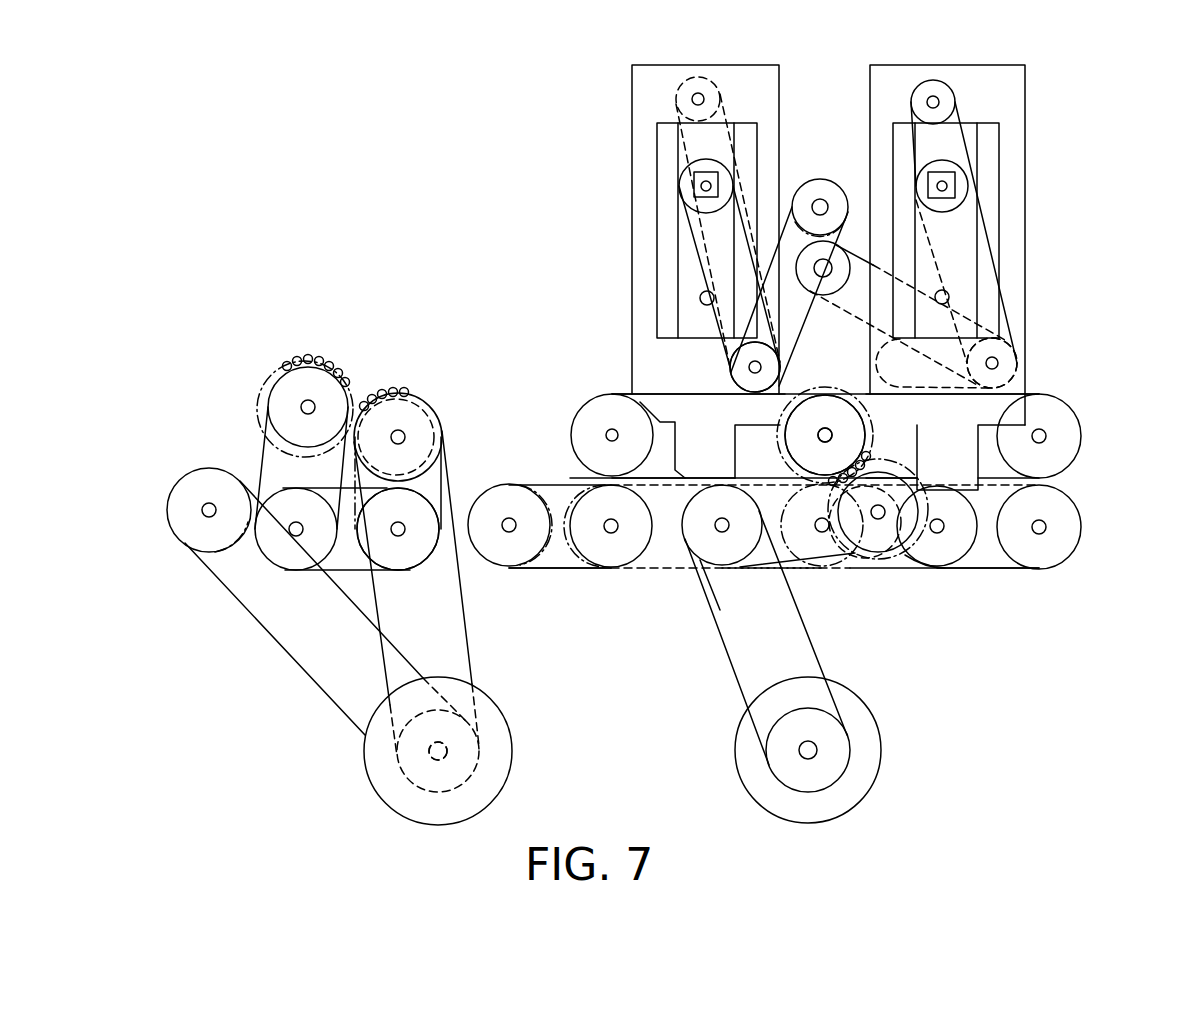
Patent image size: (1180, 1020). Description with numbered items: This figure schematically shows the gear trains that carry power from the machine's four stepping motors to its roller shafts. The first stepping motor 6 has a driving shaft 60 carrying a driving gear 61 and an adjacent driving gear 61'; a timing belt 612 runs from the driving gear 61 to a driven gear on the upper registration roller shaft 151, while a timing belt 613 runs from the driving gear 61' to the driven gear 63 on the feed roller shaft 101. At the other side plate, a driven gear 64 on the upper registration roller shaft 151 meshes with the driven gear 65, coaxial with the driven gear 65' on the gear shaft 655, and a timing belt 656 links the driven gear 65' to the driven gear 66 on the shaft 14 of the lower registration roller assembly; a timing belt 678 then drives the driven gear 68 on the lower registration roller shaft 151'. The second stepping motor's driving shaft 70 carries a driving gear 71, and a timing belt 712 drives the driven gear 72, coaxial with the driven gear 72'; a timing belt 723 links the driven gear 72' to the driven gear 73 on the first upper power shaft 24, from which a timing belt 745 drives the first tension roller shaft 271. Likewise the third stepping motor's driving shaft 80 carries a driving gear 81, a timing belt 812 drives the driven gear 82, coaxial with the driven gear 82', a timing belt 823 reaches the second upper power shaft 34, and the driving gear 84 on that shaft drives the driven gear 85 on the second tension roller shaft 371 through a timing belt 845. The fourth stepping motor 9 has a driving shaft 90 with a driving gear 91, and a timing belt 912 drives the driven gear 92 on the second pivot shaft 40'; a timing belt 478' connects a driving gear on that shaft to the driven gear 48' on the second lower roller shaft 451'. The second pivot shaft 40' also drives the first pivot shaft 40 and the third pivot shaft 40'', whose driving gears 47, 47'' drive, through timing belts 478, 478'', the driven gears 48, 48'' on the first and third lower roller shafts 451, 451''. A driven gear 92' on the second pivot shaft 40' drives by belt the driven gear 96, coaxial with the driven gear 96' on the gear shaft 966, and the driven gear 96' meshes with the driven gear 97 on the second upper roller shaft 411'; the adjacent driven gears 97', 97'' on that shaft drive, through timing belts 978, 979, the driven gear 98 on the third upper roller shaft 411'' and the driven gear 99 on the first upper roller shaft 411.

The first tension roller shaft 271 is at (698, 93).
The timing belt 745 is at (677, 104).
The driven gear 73 is at (688, 180).
The first upper power shaft 24 is at (700, 188).
The timing belt 723 is at (700, 256).
The driven gear 72 is at (659, 349).
The driven gear 72' is at (755, 367).
The driving shaft 70 is at (815, 200).
The driving gear 71 is at (823, 187).
The driving gear 81 is at (855, 233).
The driving shaft 80 is at (836, 283).
The timing belt 712 is at (800, 333).
The second tension roller shaft 371 is at (927, 96).
The driven gear 85 is at (942, 88).
The timing belt 845 is at (955, 130).
The driving gear 84 is at (962, 180).
The second upper power shaft 34 is at (948, 190).
The driven gear 82 is at (1031, 294).
The driven gear 82' is at (992, 363).
The timing belt 823 is at (1010, 318).
The timing belt 812 is at (934, 365).
The driven gear 99 is at (605, 432).
The first upper roller shaft 411 is at (572, 393).
The timing belt 979 is at (612, 394).
The driven gear 97 is at (829, 425).
The driven gear 97' is at (754, 435).
The driven gear 97'' is at (825, 435).
The second upper roller shaft 411' is at (865, 435).
The timing belt 978 is at (1037, 395).
The driven gear 98 is at (1062, 462).
The third upper roller shaft 411'' is at (1104, 430).
The driven gear 96' is at (899, 496).
The first pivot shaft 40 is at (513, 551).
The driving gear 47 is at (516, 551).
The first lower roller shaft 451 is at (611, 551).
The driven gear 48 is at (569, 505).
The second pivot shaft 40' is at (708, 553).
The timing belt 478 is at (560, 615).
The driven gear 48' is at (828, 563).
The driven gear 96 is at (878, 549).
The second lower roller shaft 451' is at (872, 559).
The third pivot shaft 40'' is at (960, 555).
The driving gear 47'' is at (953, 577).
The gear shaft 966 is at (927, 575).
The driven gear 48'' is at (1077, 527).
The third lower roller shaft 451'' is at (1073, 566).
The timing belt 478'' is at (1009, 604).
The timing belt 478' is at (772, 602).
The timing belt 912 is at (733, 673).
The driven gear 92 is at (807, 623).
The driven gear 92' is at (679, 609).
The fourth stepping motor 9 is at (882, 768).
The driving gear 91 is at (826, 772).
The driving shaft 90 is at (803, 756).
The driven gear 65 is at (308, 362).
The gear shaft 655 is at (292, 398).
The driven gear 65' is at (276, 400).
The driven gear 64 is at (376, 402).
The upper registration roller shaft 151 is at (411, 410).
The driven gear 63 is at (173, 516).
The feed roller shaft 101 is at (206, 506).
The driven gear 66 is at (279, 552).
The shaft 14 is at (295, 537).
The lower registration roller shaft 151' is at (398, 558).
The driven gear 68 is at (422, 510).
The timing belt 656 is at (258, 458).
The timing belt 678 is at (356, 575).
The timing belt 613 is at (273, 640).
The timing belt 612 is at (467, 643).
The first stepping motor 6 is at (372, 787).
The driving shaft 60 is at (457, 750).
The driving gear 61 is at (405, 808).
The driving gear 61' is at (438, 751).